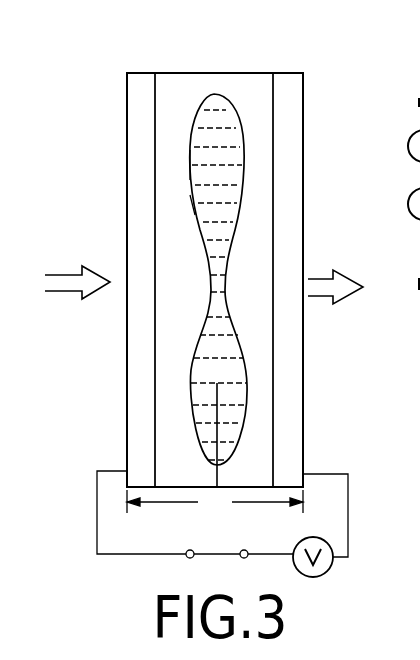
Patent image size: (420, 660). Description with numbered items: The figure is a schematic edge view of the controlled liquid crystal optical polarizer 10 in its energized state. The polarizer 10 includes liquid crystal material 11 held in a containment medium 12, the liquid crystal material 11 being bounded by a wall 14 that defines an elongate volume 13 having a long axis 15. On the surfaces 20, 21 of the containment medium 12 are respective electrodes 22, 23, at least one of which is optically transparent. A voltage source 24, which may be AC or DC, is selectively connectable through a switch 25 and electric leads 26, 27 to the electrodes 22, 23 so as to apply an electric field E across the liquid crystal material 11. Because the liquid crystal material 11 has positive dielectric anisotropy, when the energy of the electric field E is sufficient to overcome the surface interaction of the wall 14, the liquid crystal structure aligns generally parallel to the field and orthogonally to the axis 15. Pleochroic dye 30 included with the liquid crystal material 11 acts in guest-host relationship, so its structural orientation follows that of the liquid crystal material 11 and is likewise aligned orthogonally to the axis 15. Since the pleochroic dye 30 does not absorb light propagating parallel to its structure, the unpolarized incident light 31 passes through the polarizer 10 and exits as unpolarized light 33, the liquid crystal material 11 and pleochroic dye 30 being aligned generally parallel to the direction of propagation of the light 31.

The controlled liquid crystal optical polarizer 10 is at (107, 76).
The liquid crystal material 11 is at (220, 122).
The containment medium 12 is at (177, 84).
The volume 13 is at (191, 165).
The wall 14 is at (191, 208).
The axis 15 is at (217, 478).
The surface 20 is at (155, 130).
The surface 21 is at (273, 148).
The electrode 22 is at (127, 160).
The electrode 23 is at (303, 198).
The voltage source 24 is at (330, 572).
The switch 25 is at (218, 556).
The electric lead 26 is at (120, 554).
The electric lead 27 is at (348, 508).
The pleochroic dye 30 is at (216, 93).
The incident light 31 is at (63, 292).
The unpolarized light 33 is at (322, 297).
The electric field E is at (215, 503).